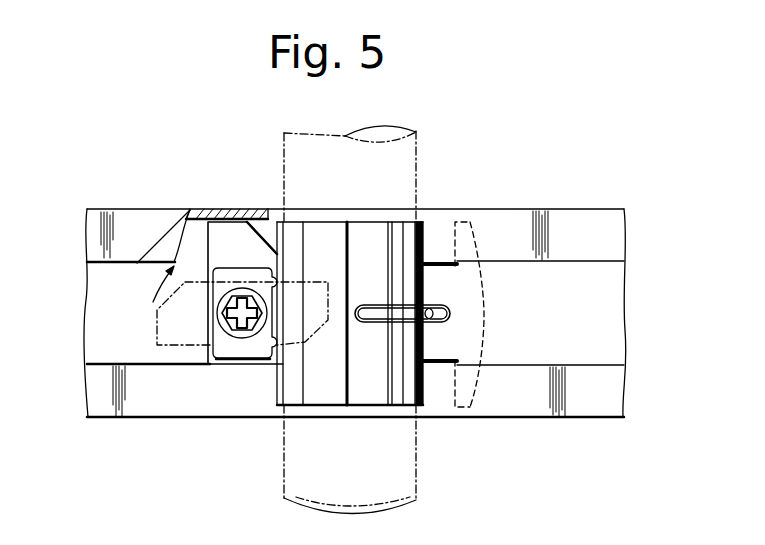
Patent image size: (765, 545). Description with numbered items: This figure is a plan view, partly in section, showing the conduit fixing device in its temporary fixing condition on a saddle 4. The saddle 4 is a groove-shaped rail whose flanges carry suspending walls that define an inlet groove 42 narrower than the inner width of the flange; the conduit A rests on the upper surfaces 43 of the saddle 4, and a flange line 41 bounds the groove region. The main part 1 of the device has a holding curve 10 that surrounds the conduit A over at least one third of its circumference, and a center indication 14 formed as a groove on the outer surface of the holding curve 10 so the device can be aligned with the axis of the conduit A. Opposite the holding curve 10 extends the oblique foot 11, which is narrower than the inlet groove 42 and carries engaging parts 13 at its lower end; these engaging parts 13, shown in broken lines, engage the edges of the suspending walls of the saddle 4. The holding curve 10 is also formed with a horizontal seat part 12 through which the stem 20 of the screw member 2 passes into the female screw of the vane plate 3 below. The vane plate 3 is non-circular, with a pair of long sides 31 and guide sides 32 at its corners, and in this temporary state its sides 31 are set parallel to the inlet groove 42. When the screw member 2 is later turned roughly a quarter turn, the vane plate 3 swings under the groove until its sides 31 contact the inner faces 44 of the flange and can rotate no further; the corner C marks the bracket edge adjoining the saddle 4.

The main part 1 is at (320, 240).
The screw member 2 is at (208, 343).
The vane plate 3 is at (168, 340).
The saddle 4 is at (580, 210).
The holding curve 10 is at (310, 390).
The foot 11 is at (466, 320).
The seat part 12 is at (225, 329).
The engaging parts 13 is at (455, 237).
The center indication 14 is at (348, 240).
The stem 20 is at (229, 353).
The sides 31 is at (133, 262).
The guide sides 32 is at (160, 281).
The flange 41 is at (602, 263).
The inlet groove 42 is at (587, 320).
The upper surfaces 43 is at (617, 240).
The inner faces 44 is at (237, 221).
The conduit A is at (416, 153).
The corner C is at (428, 218).